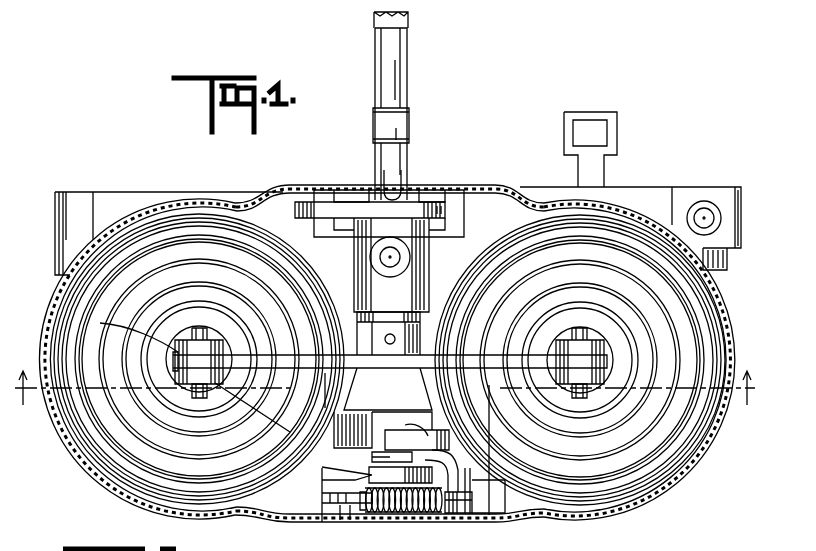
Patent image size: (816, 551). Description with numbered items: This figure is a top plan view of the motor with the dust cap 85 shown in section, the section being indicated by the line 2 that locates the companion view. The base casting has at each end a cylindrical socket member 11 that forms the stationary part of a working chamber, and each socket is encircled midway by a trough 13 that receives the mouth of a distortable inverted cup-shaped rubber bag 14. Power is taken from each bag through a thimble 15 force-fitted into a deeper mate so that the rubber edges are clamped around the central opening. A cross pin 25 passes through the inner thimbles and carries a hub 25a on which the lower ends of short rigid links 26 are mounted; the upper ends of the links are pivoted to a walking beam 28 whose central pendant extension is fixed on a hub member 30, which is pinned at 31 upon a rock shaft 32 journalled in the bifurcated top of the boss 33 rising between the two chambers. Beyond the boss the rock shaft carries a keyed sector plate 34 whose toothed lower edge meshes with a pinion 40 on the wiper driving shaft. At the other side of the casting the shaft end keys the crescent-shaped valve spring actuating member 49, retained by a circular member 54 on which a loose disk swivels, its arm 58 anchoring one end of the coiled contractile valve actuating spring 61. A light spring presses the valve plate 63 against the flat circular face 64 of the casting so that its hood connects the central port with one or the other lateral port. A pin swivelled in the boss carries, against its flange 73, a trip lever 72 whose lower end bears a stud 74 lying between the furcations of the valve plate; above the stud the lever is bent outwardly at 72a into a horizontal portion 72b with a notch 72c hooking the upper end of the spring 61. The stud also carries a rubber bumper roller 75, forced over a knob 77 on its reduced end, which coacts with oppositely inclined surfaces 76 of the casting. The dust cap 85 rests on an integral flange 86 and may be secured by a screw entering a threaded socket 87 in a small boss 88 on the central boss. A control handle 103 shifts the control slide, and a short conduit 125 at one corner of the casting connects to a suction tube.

The section line 2- 2 is at (384, 391).
The cylindrical socket member 11 is at (380, 66).
The trough 13 is at (400, 73).
The rubber bag 14 is at (229, 490).
The thimble 15 is at (216, 330).
The cross pin 25 is at (666, 334).
The hub 25a is at (674, 352).
The link 26 is at (606, 364).
The walking beam 28 is at (323, 394).
The hub member 30 is at (421, 308).
The pin 31 is at (378, 265).
The rock shaft 32 is at (389, 334).
The boss 33 is at (445, 224).
The sector plate 34 is at (306, 206).
The pinion 40 is at (450, 200).
The valve spring actuating member 49 is at (344, 507).
The circular member 54 is at (394, 513).
The arm 58 is at (365, 512).
The valve actuating spring 61 is at (458, 512).
The valve plate 63 is at (325, 497).
The flat circular face 64 is at (330, 478).
The trip lever 72 is at (372, 460).
The angularly bent portion 72a is at (489, 470).
The horizontally disposed portion 72b is at (490, 522).
The notch 72c is at (507, 515).
The flange 73 is at (376, 410).
The stud 74 is at (424, 513).
The bumper roller 75 is at (450, 441).
The inclined surfaces 76 is at (196, 388).
The knob 77 is at (418, 428).
The dust cap 85 is at (58, 427).
The flange 86 is at (712, 441).
The threaded socket 87 is at (372, 255).
The small boss 88 is at (403, 255).
The control handle 103 is at (618, 133).
The conduit 125 is at (704, 203).